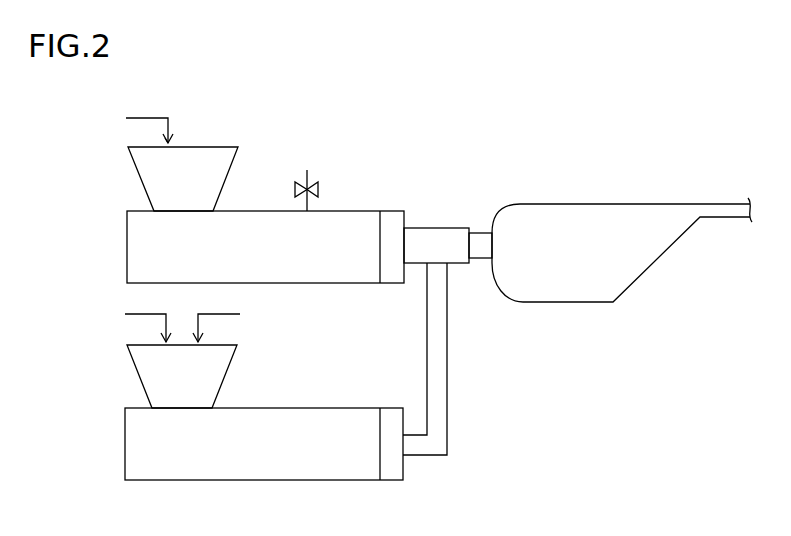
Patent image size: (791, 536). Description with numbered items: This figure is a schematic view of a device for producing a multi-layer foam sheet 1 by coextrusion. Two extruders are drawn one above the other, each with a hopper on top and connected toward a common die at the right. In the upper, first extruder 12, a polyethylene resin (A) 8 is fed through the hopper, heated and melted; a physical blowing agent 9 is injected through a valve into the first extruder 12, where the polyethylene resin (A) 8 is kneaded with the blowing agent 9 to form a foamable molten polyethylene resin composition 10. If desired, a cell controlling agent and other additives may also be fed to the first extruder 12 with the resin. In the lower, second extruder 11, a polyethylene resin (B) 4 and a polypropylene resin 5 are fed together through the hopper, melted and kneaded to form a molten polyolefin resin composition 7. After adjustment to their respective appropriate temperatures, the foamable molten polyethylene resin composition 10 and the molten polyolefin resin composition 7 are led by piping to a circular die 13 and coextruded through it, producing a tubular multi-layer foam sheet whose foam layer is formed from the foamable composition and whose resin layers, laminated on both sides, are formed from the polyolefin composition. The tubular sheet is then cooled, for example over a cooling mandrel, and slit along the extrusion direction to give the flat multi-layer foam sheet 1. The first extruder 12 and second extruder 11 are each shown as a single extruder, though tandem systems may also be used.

The multi-layer foam sheet 1 is at (718, 206).
The polyethylene resin (B) 4 is at (142, 323).
The polypropylene resin 5 is at (223, 323).
The molten polyolefin resin composition 7 is at (347, 427).
The polyethylene resin (A) 8 is at (141, 125).
The physical blowing agent 9 is at (308, 163).
The foamable molten polyethylene resin composition 10 is at (347, 235).
The second extruder 11 is at (125, 440).
The first extruder 12 is at (127, 245).
The circular die 13 is at (477, 240).